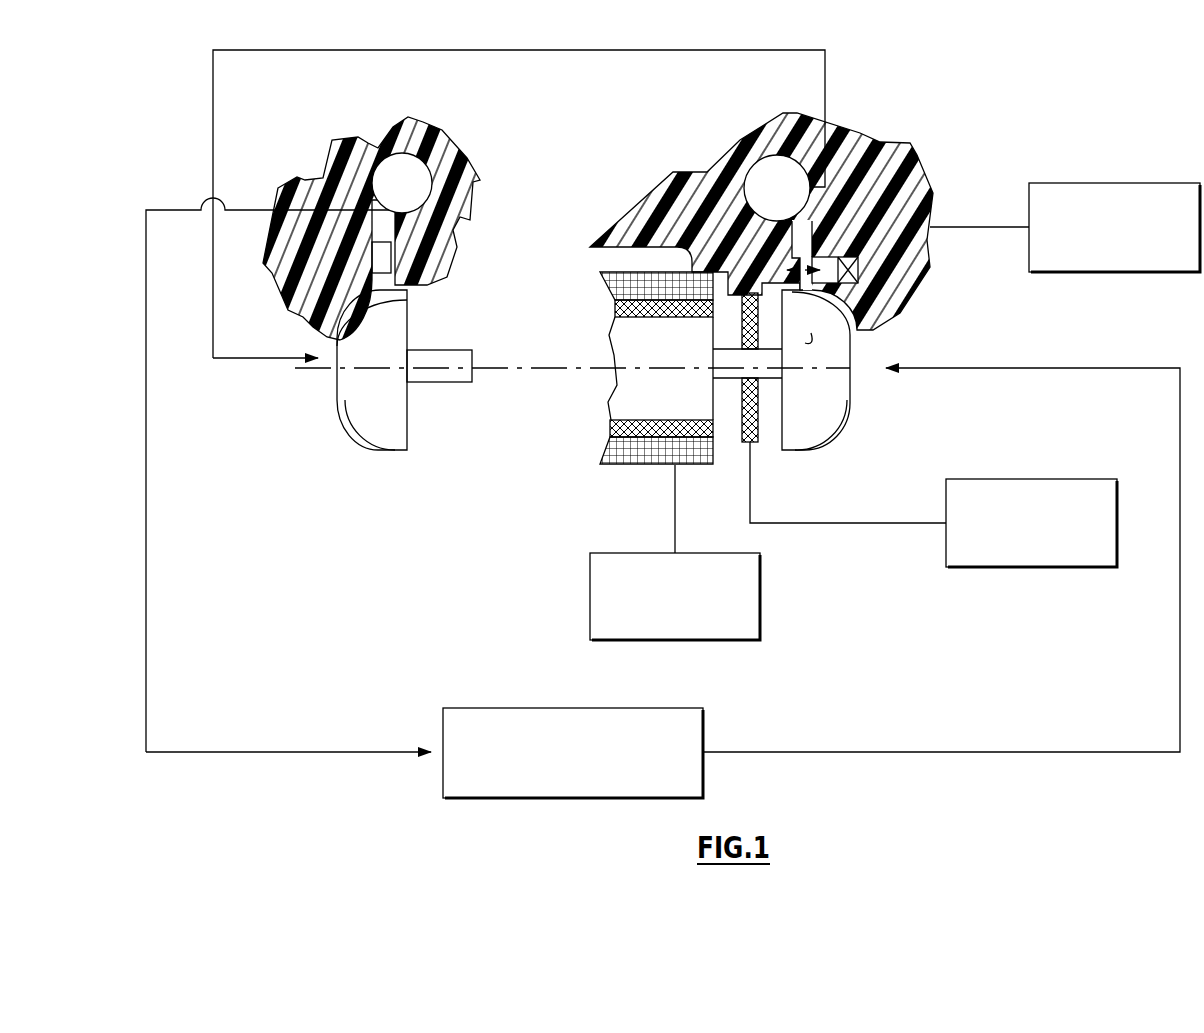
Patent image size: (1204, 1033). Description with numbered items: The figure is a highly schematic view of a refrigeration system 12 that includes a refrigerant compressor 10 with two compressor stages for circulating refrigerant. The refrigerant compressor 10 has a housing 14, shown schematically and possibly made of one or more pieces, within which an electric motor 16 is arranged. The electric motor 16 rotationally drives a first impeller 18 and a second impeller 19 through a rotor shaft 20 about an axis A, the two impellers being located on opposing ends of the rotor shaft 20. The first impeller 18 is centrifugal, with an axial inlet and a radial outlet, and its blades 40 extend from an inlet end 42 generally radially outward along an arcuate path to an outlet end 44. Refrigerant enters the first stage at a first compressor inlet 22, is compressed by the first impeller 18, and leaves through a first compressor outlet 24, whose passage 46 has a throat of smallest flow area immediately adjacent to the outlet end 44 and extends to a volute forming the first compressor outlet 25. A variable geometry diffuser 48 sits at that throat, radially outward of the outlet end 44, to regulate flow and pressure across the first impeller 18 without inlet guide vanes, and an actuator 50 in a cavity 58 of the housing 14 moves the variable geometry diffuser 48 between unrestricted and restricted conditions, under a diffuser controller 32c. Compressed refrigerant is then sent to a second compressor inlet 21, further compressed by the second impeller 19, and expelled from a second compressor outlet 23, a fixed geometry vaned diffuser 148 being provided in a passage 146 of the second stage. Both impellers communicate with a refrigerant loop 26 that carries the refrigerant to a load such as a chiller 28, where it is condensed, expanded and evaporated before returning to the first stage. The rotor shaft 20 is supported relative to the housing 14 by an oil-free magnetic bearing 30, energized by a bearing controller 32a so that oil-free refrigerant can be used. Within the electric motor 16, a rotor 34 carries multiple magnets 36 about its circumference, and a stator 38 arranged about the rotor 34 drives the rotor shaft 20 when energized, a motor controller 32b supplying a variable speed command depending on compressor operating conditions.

The refrigerant compressor 10 is at (596, 185).
The refrigeration system 12 is at (1096, 160).
The housing 14 is at (737, 155).
The electric motor 16 is at (615, 396).
The first impeller 18 is at (845, 380).
The second impeller 19 is at (343, 378).
The rotor shaft 20 is at (732, 378).
The second compressor inlet 21 is at (318, 342).
The first compressor inlet 22 is at (862, 345).
The second compressor outlet 23 is at (425, 279).
The first compressor outlet 24 is at (792, 278).
The first compressor outlet volute 25 is at (793, 170).
The refrigerant loop 26 is at (903, 745).
The chiller 28 is at (515, 708).
The magnetic bearing 30 is at (745, 442).
The bearing controller 32a is at (1020, 567).
The motor controller 32b is at (740, 640).
The diffuser controller 32c is at (1107, 272).
The rotor 34 is at (618, 410).
The magnets 36 is at (640, 427).
The stator 38 is at (627, 465).
The blades 40 is at (812, 415).
The inlet end 42 is at (853, 392).
The outlet end 44 is at (802, 450).
The passage 46 is at (803, 235).
The variable geometry diffuser 48 is at (828, 257).
The actuator 50 is at (900, 270).
The cavity 58 is at (870, 323).
The passage 146 is at (388, 222).
The fixed geometry vaned diffuser 148 is at (382, 256).
The axis A is at (587, 370).